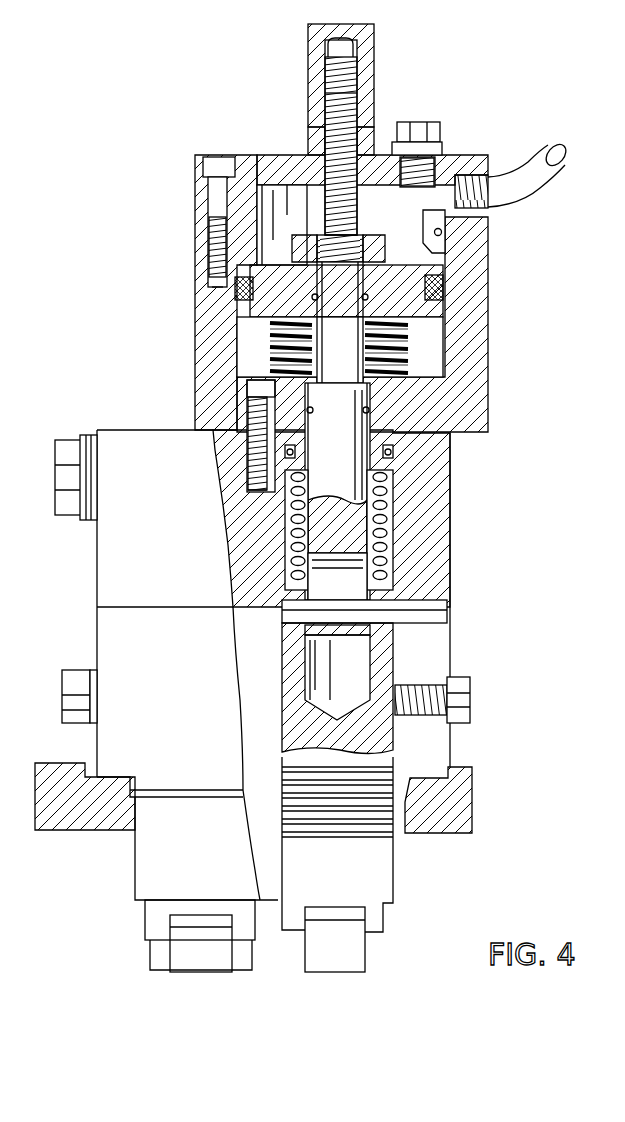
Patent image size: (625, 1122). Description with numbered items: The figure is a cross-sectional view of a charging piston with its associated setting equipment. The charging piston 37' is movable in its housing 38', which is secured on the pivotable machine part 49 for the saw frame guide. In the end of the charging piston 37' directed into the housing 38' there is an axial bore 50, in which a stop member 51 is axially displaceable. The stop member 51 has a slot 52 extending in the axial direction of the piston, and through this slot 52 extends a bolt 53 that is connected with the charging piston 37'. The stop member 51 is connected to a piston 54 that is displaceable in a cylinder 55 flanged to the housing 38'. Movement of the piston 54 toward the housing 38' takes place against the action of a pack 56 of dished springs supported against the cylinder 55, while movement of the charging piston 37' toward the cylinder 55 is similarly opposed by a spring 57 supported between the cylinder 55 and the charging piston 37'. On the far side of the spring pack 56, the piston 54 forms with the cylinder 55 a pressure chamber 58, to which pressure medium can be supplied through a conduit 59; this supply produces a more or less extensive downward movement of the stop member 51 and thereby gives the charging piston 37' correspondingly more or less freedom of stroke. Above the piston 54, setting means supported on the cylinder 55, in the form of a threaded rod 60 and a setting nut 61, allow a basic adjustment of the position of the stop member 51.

The charging piston 37' is at (368, 864).
The housing 38' is at (460, 688).
The pivotable machine part 49 is at (450, 810).
The axial bore 50 is at (358, 672).
The stop member 51 is at (358, 435).
The slot 52 is at (350, 595).
The bolt 53 is at (387, 613).
The piston 54 is at (413, 300).
The cylinder 55 is at (473, 243).
The pack of dished springs 56 is at (412, 358).
The spring 57 is at (360, 502).
The pressure chamber 58 is at (316, 228).
The conduit 59 is at (527, 177).
The threaded rod 60 is at (333, 148).
The setting nut 61 is at (317, 53).